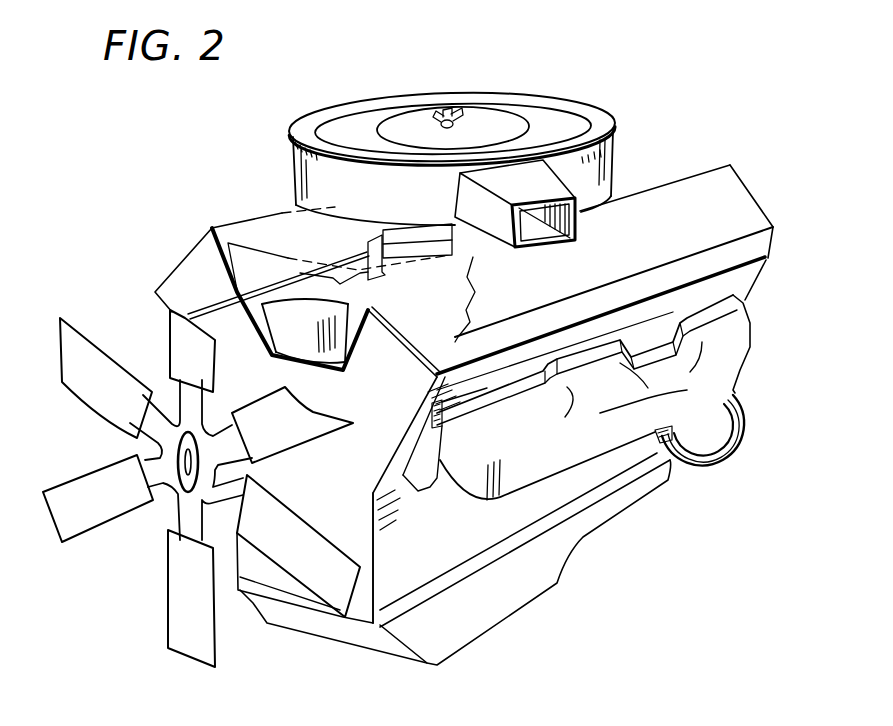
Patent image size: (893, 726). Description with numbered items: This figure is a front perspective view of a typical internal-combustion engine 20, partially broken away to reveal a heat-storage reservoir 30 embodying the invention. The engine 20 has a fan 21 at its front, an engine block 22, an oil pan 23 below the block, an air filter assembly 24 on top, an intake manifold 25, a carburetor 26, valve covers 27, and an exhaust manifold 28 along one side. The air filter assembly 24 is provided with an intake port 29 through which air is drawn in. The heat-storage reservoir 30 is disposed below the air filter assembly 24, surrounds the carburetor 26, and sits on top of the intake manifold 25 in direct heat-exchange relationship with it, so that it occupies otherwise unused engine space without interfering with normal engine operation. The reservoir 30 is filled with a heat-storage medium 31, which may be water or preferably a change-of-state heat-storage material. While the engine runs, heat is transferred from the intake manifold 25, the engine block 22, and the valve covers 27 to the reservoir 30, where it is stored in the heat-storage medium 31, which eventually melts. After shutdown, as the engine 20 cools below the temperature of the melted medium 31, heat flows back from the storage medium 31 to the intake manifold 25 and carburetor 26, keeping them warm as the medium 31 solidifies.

The internal-combustion engine 20 is at (180, 212).
The fan 21 is at (127, 500).
The engine block 22 is at (340, 485).
The oil pan 23 is at (473, 622).
The air filter assembly 24 is at (608, 146).
The intake manifold 25 is at (300, 338).
The carburetor 26 is at (423, 233).
The valve covers 27 is at (700, 218).
The exhaust manifold 28 is at (723, 368).
The intake port 29 is at (542, 230).
The heat-storage reservoir 30 is at (263, 227).
The heat-storage medium 31 is at (346, 268).